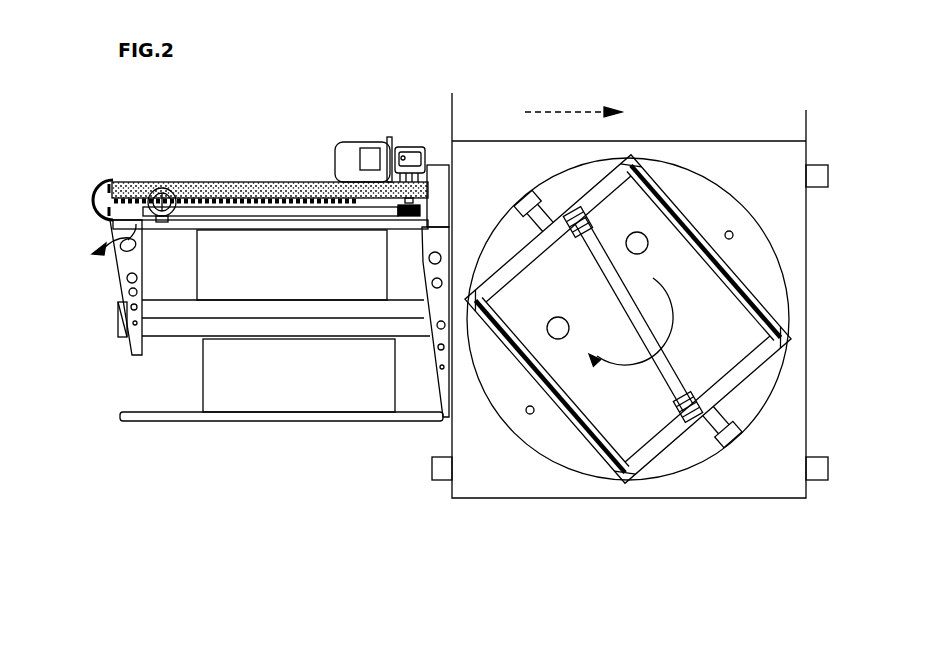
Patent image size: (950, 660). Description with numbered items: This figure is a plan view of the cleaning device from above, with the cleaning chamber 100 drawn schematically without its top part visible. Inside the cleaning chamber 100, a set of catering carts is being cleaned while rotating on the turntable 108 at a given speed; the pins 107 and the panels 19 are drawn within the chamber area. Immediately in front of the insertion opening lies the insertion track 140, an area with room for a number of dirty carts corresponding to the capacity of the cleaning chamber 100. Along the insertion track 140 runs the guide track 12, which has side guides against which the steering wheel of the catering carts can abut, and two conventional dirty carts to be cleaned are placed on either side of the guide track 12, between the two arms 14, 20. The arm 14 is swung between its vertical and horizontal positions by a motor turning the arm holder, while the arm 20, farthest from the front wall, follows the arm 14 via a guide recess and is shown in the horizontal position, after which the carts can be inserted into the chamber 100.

The cleaning chamber 100 is at (785, 197).
The turntable 108 is at (680, 183).
The locating pins 107 is at (737, 224).
The panels 19 is at (260, 283).
The guide track 12 is at (178, 318).
The arm 20 is at (130, 265).
The arm 14 is at (443, 305).
The insertion track 140 is at (145, 383).